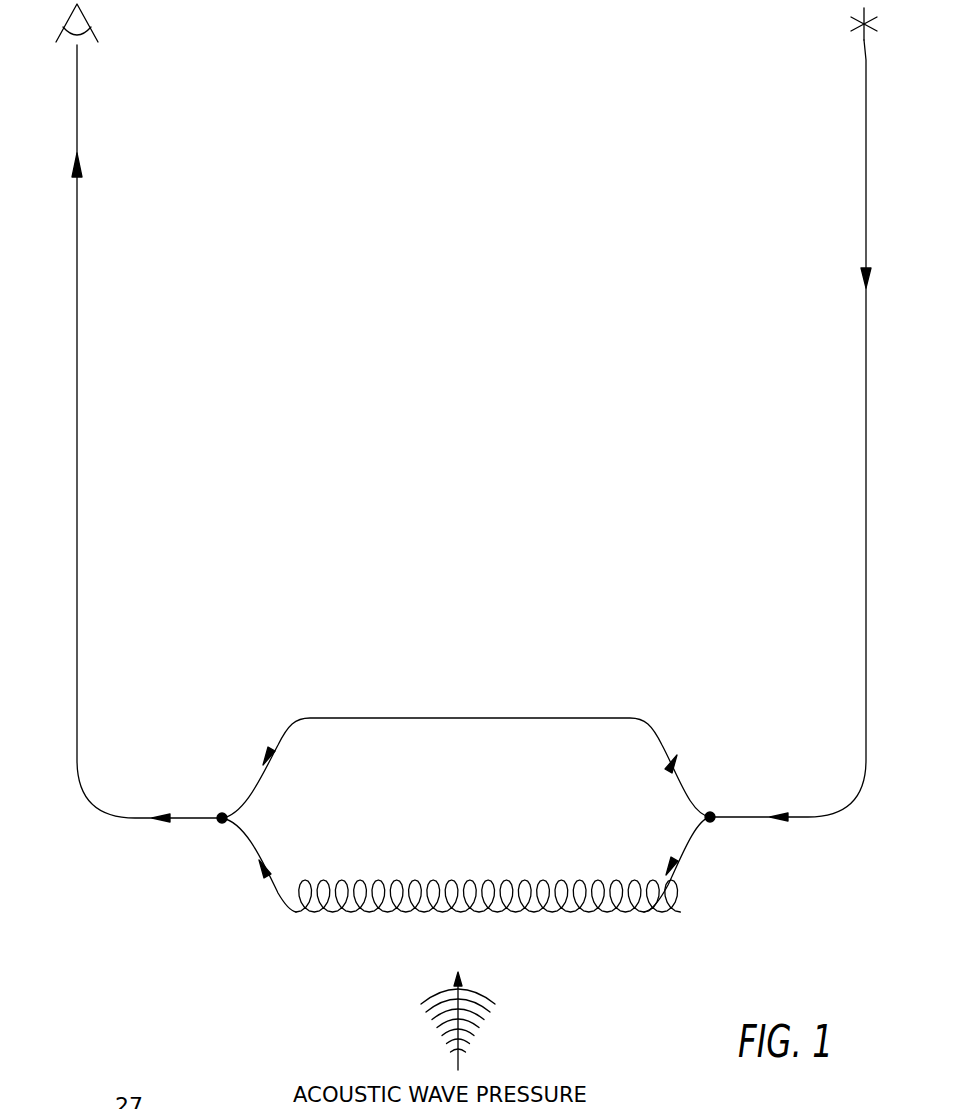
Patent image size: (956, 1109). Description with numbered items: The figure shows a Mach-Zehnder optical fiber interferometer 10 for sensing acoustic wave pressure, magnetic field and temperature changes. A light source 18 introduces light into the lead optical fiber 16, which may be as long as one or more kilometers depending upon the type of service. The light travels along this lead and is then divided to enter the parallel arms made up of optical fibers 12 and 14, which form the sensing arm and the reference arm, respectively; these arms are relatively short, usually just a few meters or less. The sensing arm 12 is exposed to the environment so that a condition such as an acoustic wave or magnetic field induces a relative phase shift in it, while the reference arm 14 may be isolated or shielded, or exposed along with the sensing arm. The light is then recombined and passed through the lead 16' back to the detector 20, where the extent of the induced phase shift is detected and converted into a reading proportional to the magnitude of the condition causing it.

The Mach-Zehnder optical fiber interferometer 10 is at (466, 813).
The optical fiber sensing arm 12 is at (458, 883).
The optical fiber reference arm 14 is at (558, 720).
The optical fiber waveguide lead 16 is at (790, 430).
The optical fiber waveguide lead 16' is at (147, 433).
The light source 18 is at (856, 26).
The detector 20 is at (90, 25).